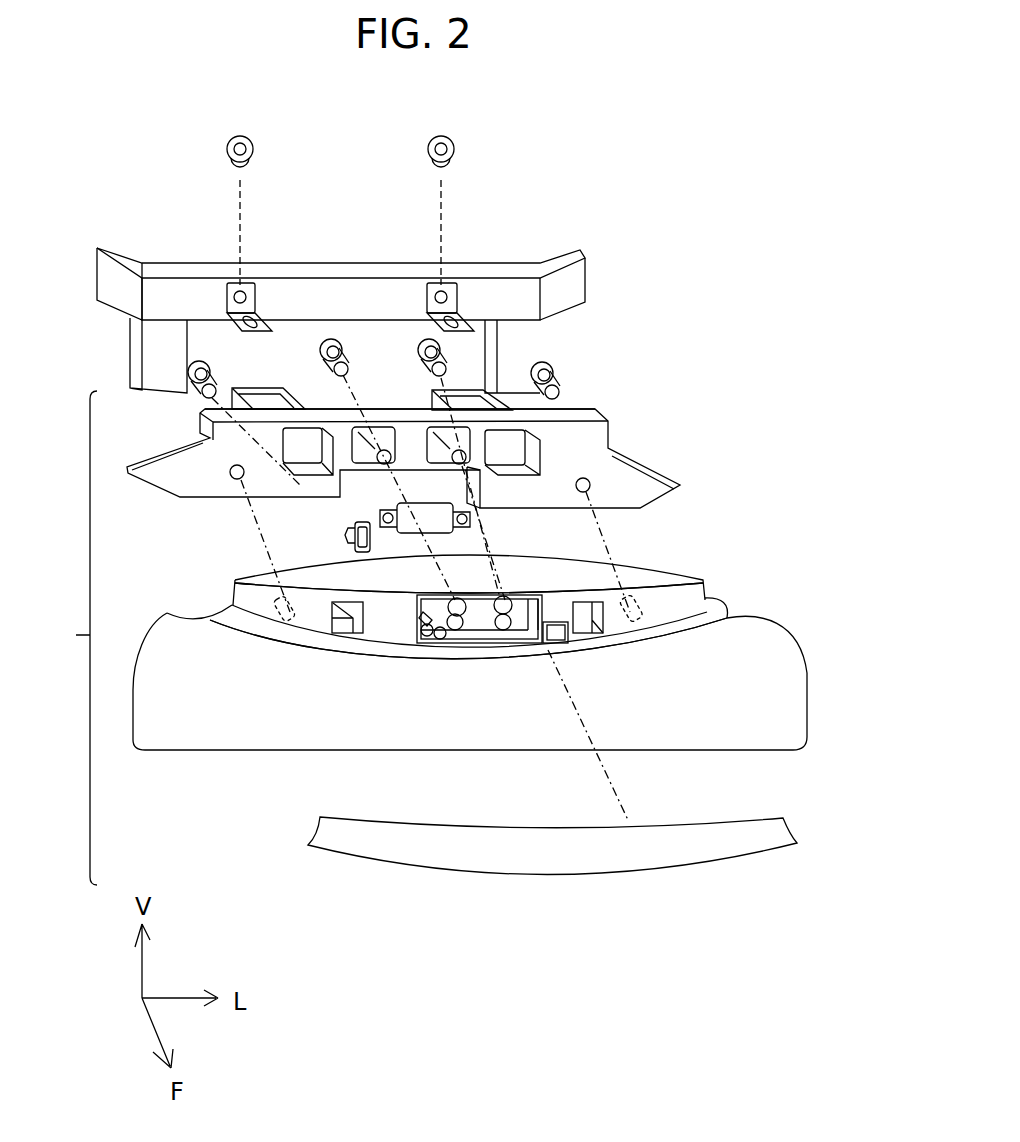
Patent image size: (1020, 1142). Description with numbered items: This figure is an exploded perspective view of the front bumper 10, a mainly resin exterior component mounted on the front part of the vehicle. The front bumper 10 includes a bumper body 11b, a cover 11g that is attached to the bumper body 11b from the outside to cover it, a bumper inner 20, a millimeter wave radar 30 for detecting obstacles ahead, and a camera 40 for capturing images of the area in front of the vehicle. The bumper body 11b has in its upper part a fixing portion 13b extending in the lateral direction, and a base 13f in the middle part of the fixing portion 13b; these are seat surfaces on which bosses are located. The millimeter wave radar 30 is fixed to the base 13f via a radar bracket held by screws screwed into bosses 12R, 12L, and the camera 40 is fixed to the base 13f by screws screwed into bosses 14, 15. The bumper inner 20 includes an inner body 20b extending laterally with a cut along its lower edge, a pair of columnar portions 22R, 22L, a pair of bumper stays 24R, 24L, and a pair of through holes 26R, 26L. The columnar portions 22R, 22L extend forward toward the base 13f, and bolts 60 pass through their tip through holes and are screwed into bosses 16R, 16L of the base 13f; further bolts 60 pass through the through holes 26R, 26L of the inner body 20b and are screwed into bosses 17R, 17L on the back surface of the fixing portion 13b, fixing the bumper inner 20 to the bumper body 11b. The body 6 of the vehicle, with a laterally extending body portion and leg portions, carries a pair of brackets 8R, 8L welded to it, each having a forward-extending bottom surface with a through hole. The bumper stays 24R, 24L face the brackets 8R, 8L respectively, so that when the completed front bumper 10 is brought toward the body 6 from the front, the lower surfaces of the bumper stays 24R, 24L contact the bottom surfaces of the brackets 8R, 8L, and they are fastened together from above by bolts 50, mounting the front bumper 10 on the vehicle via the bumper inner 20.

The body 6 is at (587, 282).
The right bracket 8R is at (251, 293).
The left bracket 8L is at (452, 293).
The bolt 50 is at (255, 152).
The bolt 60 is at (320, 350).
The bumper inner 20 is at (734, 392).
The inner body 20b is at (602, 416).
The right bumper stay 24R is at (227, 401).
The left bumper stay 24L is at (590, 428).
The right columnar portion 22R is at (352, 462).
The left columnar portion 22L is at (470, 447).
The right through hole 26R is at (233, 478).
The left through hole 26L is at (592, 486).
The millimeter wave radar 30 is at (432, 522).
The camera 40 is at (370, 537).
The front bumper 10 is at (425, 638).
The right boss 17R is at (280, 600).
The left boss 17L is at (640, 604).
The fixing portion 13b is at (679, 593).
The base 13f is at (492, 650).
The right boss 12R is at (457, 634).
The left boss 12L is at (512, 636).
The boss 15 is at (425, 634).
The boss 14 is at (440, 641).
The right boss 16R is at (486, 648).
The left boss 16L is at (556, 630).
The bumper body 11b is at (247, 712).
The cover 11g is at (357, 838).